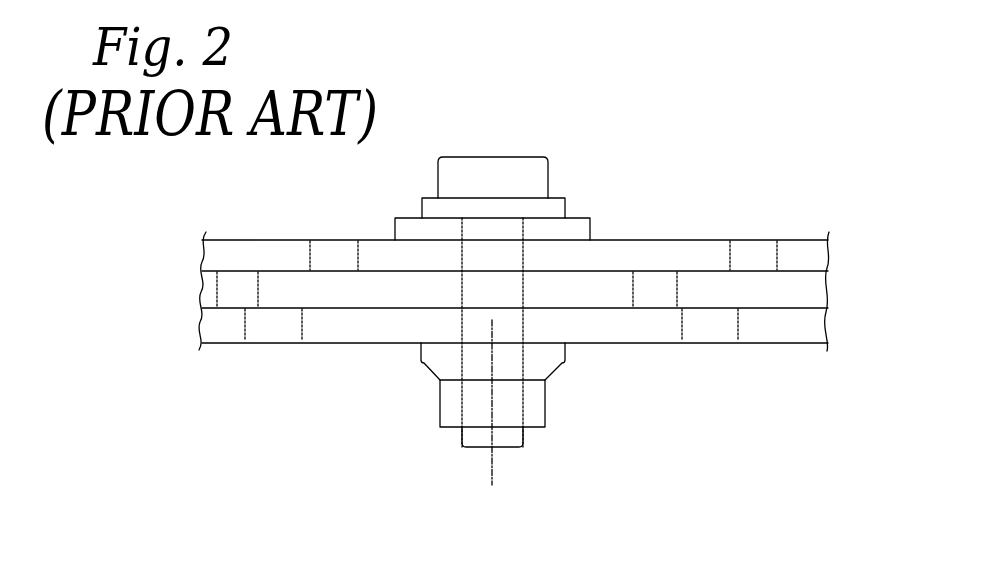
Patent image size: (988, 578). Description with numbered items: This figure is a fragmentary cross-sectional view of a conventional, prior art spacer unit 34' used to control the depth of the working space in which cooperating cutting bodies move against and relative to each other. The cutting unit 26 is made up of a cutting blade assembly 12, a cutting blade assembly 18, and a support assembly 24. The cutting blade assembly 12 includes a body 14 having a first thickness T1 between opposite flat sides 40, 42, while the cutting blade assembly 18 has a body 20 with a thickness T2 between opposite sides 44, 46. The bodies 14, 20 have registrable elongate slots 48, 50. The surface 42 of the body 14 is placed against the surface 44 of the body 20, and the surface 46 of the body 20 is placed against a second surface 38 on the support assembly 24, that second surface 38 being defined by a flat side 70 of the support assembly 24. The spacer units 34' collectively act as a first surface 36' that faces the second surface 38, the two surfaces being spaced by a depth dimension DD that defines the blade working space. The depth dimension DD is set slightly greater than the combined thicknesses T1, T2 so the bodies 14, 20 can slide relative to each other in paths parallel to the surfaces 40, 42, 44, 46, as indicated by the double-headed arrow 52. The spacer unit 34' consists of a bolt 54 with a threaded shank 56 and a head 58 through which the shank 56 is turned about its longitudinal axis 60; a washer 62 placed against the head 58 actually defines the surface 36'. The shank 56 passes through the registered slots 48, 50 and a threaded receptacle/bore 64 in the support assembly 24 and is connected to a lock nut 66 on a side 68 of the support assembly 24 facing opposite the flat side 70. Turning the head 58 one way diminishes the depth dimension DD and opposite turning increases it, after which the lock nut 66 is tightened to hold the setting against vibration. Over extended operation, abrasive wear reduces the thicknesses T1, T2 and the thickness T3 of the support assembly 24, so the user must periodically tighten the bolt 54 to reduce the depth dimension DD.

The cutting blade assembly 12 is at (280, 227).
The body 14 is at (365, 250).
The cutting blade assembly 18 is at (306, 306).
The body 20 is at (697, 290).
The support assembly 24 is at (348, 335).
The cutting unit 26 is at (173, 305).
The spacer unit 34' is at (414, 143).
The first surface 36' is at (487, 179).
The second surface 38 is at (415, 307).
The flat side 40 is at (645, 240).
The flat side 42 is at (620, 271).
The side 44 is at (670, 271).
The side 46 is at (717, 310).
The elongate slot 48 is at (310, 255).
The elongate slot 50 is at (218, 287).
The double-headed arrow 52 is at (82, 253).
The bolt 54 is at (540, 182).
The threaded shank 56 is at (516, 325).
The head 58 is at (455, 170).
The longitudinal axis 60 is at (492, 462).
The washer 62 is at (397, 228).
The threaded receptacle/bore 64 is at (478, 325).
The lock nut 66 is at (477, 407).
The side 68 is at (663, 343).
The flat side 70 is at (753, 308).
The depth dimension DD is at (507, 254).
The first thickness T1 is at (583, 260).
The thickness T2 is at (552, 284).
The thickness T3 is at (777, 321).